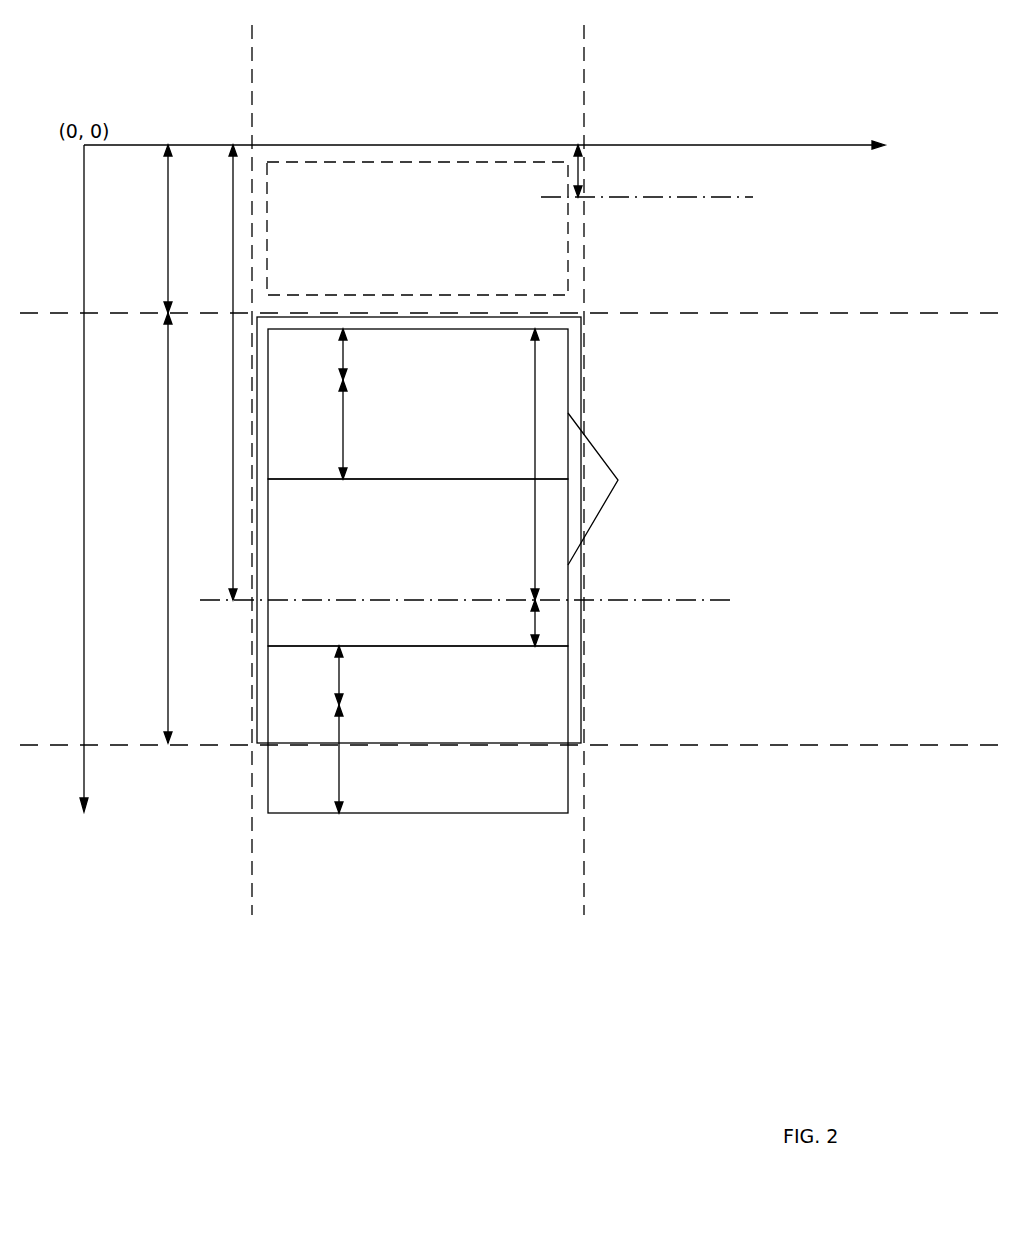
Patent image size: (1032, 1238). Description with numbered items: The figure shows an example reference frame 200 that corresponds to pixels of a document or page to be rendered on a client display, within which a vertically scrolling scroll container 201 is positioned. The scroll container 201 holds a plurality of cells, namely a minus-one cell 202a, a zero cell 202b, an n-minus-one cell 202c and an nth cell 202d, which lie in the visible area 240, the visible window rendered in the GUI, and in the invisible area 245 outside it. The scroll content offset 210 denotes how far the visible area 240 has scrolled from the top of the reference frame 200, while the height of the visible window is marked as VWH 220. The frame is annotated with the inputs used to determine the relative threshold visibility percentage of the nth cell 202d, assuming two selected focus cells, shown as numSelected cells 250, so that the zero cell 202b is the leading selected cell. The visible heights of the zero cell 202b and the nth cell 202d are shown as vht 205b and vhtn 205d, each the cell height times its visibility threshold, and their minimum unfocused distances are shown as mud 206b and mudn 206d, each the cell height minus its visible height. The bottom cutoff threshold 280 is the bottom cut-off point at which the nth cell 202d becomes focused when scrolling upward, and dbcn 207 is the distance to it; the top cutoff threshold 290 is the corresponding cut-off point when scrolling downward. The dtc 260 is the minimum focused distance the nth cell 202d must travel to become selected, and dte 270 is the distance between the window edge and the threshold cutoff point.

The reference frame 200 is at (179, 72).
The scroll container 201 is at (418, 110).
The cell-1 202a is at (394, 245).
The cell 0 202b is at (383, 439).
The cell n-1 202c is at (383, 556).
The cell n 202d is at (391, 731).
The vht0 205b is at (289, 457).
The vhtn 205d is at (281, 804).
The mud0 206b is at (282, 379).
The mudn 206d is at (278, 704).
The dbcn 207 is at (189, 436).
The scroll content offset (SCO) (dy) 210 is at (112, 266).
The view window height (VWH hw) 220 is at (116, 554).
The visible area 240 is at (592, 355).
The invisible area 245 is at (590, 274).
The number of selected cells 250 is at (660, 518).
The dtc 260 is at (515, 639).
The dte 270 is at (492, 561).
The bottom cutoff threshold 280 is at (888, 628).
The top cutoff threshold 290 is at (845, 187).